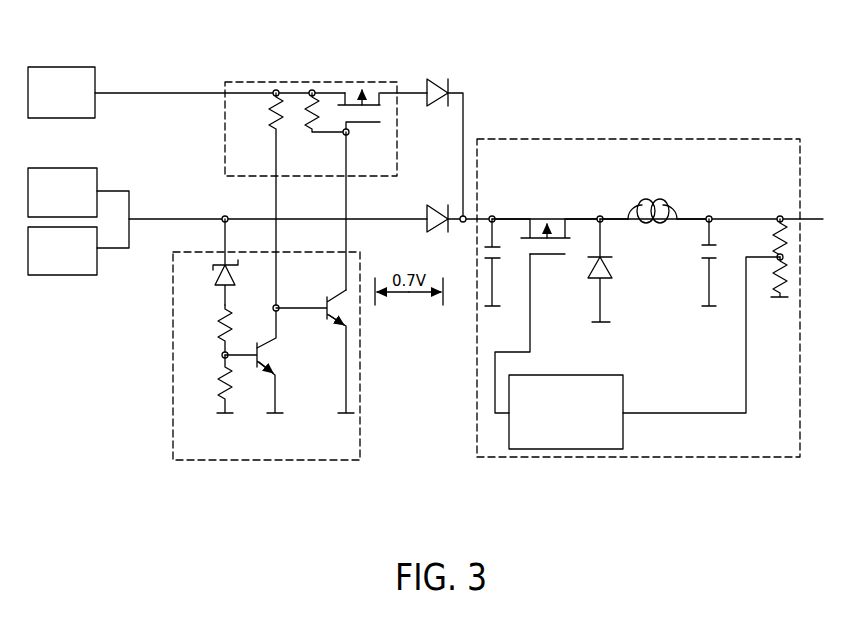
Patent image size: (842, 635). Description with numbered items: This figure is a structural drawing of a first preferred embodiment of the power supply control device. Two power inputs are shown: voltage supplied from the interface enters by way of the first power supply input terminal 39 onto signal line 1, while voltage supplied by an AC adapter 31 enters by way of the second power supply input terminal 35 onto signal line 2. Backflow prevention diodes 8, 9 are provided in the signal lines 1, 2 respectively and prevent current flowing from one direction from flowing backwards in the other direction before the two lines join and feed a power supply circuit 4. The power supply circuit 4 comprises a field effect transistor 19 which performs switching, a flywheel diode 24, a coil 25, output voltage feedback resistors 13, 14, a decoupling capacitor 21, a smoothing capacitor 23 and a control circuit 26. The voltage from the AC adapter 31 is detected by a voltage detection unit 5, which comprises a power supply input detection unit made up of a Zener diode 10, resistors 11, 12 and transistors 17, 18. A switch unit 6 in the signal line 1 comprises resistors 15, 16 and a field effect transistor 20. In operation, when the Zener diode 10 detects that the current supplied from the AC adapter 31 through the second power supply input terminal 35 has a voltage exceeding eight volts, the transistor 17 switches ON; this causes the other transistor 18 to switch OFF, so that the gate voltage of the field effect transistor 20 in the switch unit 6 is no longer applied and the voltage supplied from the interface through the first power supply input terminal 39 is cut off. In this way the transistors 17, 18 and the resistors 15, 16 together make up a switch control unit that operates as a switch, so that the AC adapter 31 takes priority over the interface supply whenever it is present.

The signal line 1 is at (150, 93).
The signal line 2 is at (146, 219).
The power supply circuit 4 is at (663, 460).
The voltage detection unit 5 is at (308, 461).
The switch unit 6 is at (344, 82).
The backflow prevention diode 8 is at (430, 104).
The backflow prevention diode 9 is at (425, 226).
The Zener diode 10 is at (214, 281).
The resistor 11 is at (215, 319).
The resistor 12 is at (215, 375).
The output voltage feedback resistor 13 is at (772, 246).
The output voltage feedback resistor 14 is at (775, 292).
The resistor 15 is at (271, 127).
The resistor 16 is at (306, 129).
The transistor 17 is at (283, 362).
The transistor 18 is at (326, 300).
The field effect transistor 19 is at (558, 210).
The field effect transistor 20 is at (372, 123).
The decoupling capacitor 21 is at (505, 256).
The smoothing capacitor 23 is at (697, 253).
The flywheel diode 24 is at (592, 283).
The coil 25 is at (665, 198).
The control circuit 26 is at (625, 394).
The AC adapter 31 is at (94, 168).
The second power supply input terminal 35 is at (78, 275).
The first power supply input terminal 39 is at (67, 67).